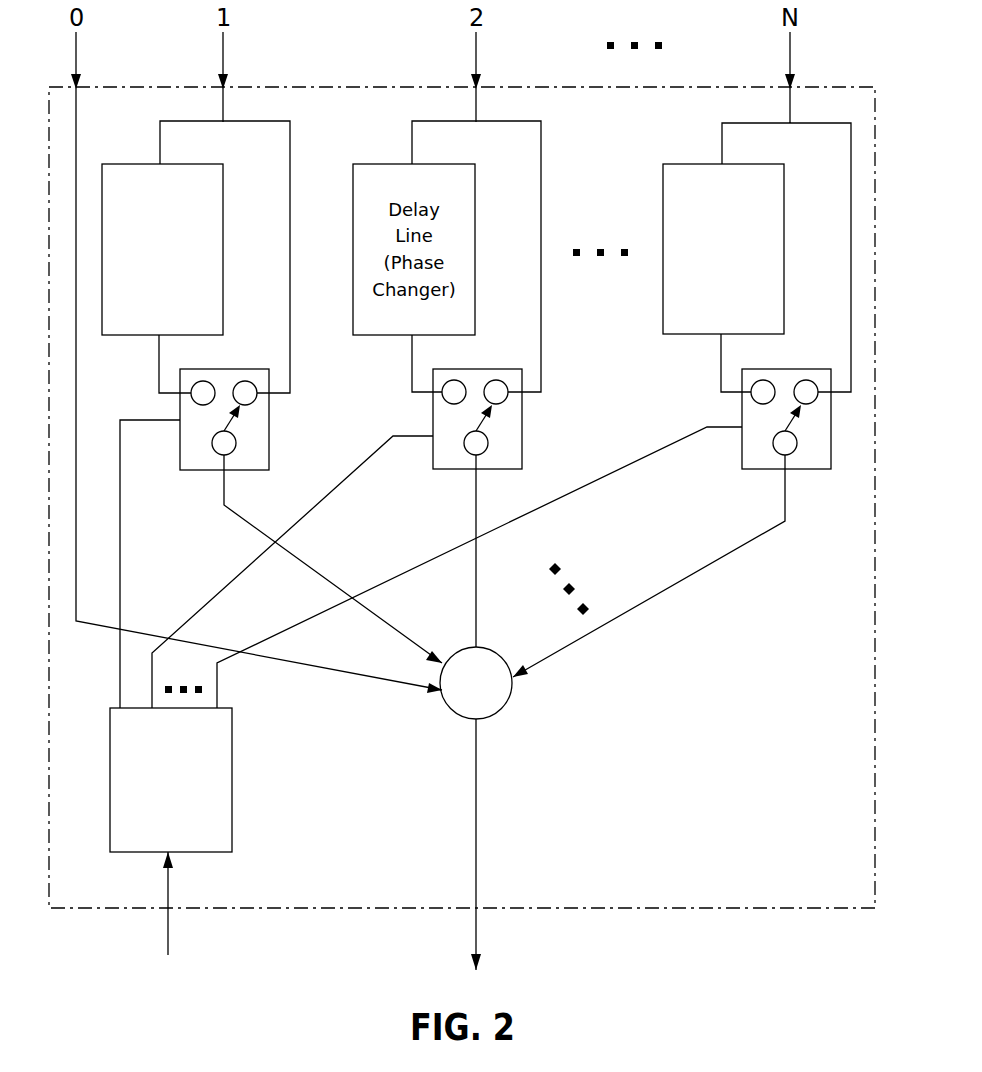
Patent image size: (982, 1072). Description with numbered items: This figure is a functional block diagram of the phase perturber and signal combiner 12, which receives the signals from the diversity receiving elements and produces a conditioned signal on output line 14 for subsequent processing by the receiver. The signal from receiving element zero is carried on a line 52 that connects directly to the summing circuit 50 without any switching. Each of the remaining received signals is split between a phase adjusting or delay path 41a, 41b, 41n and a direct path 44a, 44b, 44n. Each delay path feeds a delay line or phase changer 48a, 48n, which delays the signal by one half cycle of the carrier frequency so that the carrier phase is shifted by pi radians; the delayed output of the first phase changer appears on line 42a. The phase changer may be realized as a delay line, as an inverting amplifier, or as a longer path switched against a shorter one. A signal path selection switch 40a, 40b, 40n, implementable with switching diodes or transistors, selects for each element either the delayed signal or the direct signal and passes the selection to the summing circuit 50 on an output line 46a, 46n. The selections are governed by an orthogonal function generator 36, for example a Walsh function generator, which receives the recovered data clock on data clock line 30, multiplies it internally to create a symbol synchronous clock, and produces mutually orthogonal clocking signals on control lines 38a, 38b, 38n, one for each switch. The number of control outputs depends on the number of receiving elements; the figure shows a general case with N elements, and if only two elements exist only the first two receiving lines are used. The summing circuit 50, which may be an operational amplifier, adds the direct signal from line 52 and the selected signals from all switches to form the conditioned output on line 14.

The phase perturber and signal combiner 12 is at (697, 783).
The output line 14 is at (478, 928).
The data clock line 30 is at (170, 930).
The orthogonal function generator 36 is at (232, 779).
The control line 38a is at (117, 687).
The control line 38b is at (370, 456).
The control line 38n is at (218, 680).
The signal path selection switch 40a is at (270, 420).
The signal path selection switch 40b is at (522, 420).
The signal path selection switch 40n is at (811, 470).
The delay path 41a is at (180, 121).
The delay path 41b is at (435, 121).
The delay path 41n is at (770, 122).
The delay line output line 42a is at (156, 355).
The direct path 44a is at (290, 350).
The direct path 44b is at (541, 333).
The direct path 44n is at (812, 122).
The switch output line 46a is at (300, 562).
The switch output line 46n is at (680, 585).
The delay line (phase changer) 48a is at (223, 195).
The delay line (phase changer) 48n is at (678, 164).
The summing circuit 50 is at (507, 708).
The direct line 52 is at (76, 508).